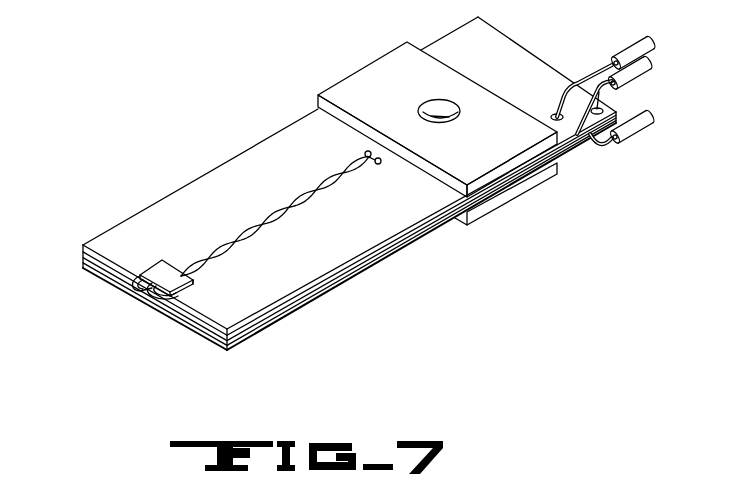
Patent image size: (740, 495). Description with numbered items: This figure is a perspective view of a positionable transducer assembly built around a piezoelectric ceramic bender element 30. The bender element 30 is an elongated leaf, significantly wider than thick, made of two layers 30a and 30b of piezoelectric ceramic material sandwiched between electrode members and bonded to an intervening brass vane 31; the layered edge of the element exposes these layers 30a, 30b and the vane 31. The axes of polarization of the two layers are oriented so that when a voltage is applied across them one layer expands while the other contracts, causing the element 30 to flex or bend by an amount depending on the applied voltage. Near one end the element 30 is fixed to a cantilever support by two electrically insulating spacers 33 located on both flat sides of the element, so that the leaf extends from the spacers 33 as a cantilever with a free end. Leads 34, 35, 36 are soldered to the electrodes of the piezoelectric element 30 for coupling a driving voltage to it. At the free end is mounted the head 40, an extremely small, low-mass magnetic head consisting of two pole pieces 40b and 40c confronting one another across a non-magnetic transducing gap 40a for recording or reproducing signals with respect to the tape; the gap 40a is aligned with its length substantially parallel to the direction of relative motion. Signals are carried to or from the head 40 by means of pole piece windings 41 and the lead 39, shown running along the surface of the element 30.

The piezoelectric ceramic bender element 30 is at (319, 196).
The piezoelectric ceramic layer 30a is at (83, 247).
The piezoelectric ceramic layer 30b is at (229, 350).
The brass vane 31 is at (82, 258).
The electrically insulating spacers 33 is at (372, 72).
The lead 34 is at (652, 44).
The lead 35 is at (652, 64).
The lead 36 is at (652, 118).
The lead 39 is at (265, 227).
The head 40 is at (177, 289).
The non-magnetic transducing gap 40a is at (142, 290).
The pole piece 40b is at (160, 260).
The pole piece 40c is at (195, 279).
The pole piece windings 41 is at (175, 296).